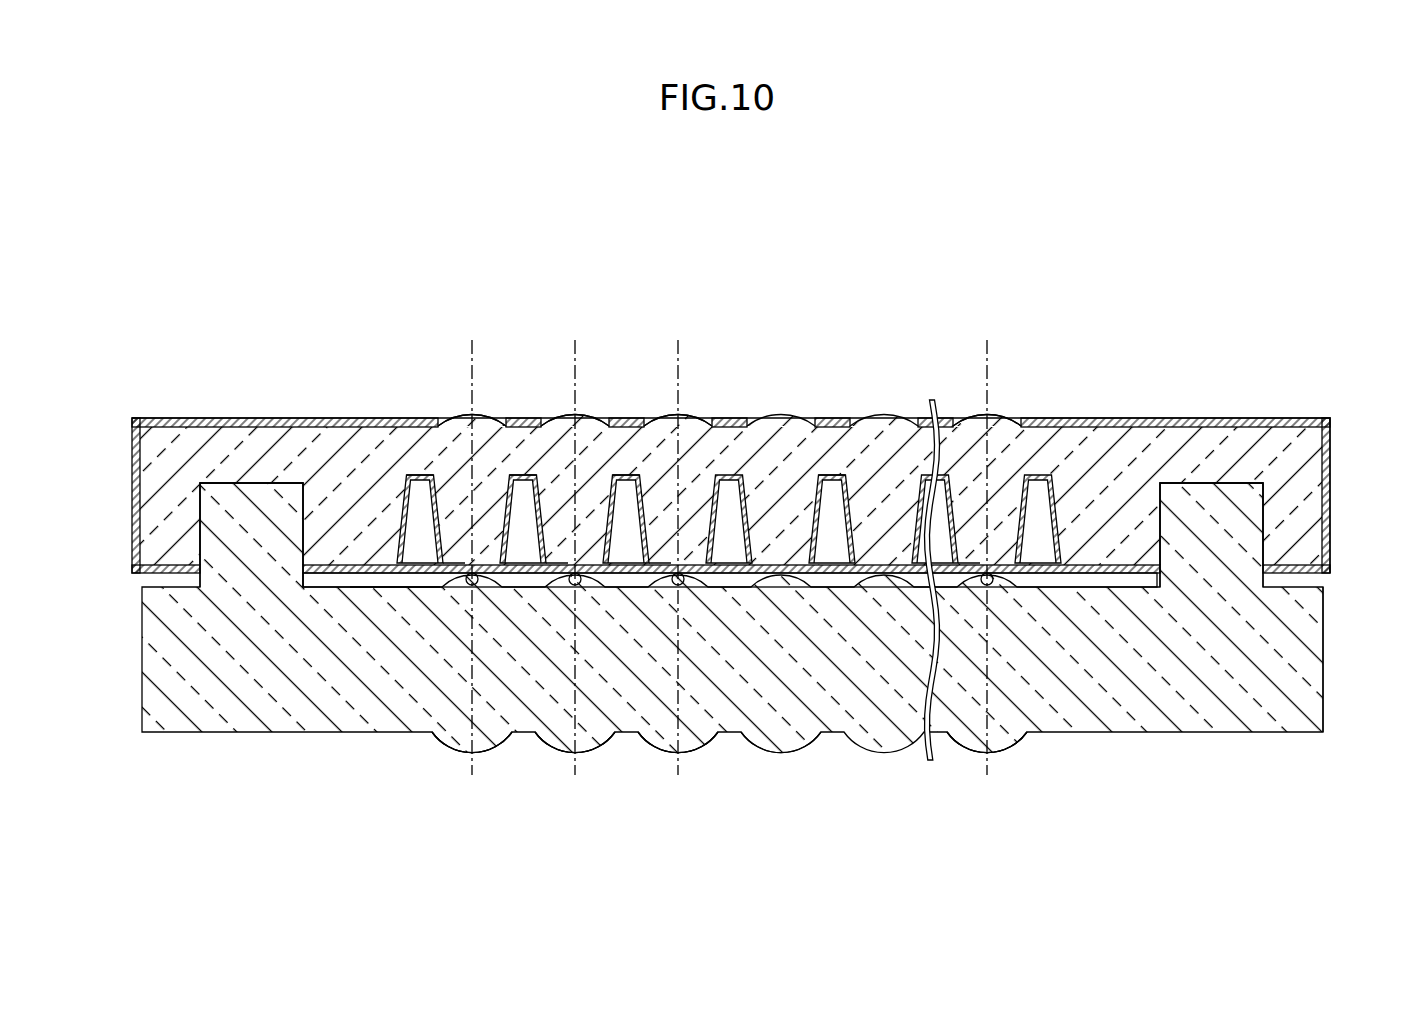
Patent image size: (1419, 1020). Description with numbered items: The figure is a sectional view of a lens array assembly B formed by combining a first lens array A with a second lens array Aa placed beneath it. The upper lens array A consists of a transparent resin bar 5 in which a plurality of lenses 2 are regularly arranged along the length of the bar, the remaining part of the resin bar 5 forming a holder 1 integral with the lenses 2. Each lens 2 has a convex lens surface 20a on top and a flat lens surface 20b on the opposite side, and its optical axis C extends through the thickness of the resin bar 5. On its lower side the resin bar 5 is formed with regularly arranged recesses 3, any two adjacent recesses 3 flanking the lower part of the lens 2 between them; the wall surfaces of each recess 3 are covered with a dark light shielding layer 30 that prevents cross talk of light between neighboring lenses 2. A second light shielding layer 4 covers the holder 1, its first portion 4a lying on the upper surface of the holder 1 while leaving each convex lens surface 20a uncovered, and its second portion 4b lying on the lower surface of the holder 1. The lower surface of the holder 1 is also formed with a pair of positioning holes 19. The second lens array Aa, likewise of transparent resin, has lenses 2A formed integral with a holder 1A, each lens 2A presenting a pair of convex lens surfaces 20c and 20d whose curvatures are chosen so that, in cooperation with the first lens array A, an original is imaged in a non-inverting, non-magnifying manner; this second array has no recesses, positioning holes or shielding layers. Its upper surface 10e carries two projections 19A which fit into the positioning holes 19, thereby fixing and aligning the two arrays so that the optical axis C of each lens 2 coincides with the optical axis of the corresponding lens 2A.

The holder 1 is at (365, 427).
The holder 1A is at (372, 692).
The lens 2 is at (455, 417).
The lens 2A is at (450, 720).
The recess 3 is at (400, 530).
The light shielding layer 30 is at (422, 478).
The light shielding layer 4 is at (745, 513).
The first portion 4a is at (738, 426).
The second portion 4b is at (1125, 588).
The resin bar 5 is at (180, 427).
The upper surface 10e is at (392, 585).
The positioning hole 19 is at (200, 512).
The projection 19A is at (220, 540).
The convex lens surface 20a is at (477, 415).
The flat lens surface 20b is at (457, 572).
The convex lens surface 20c is at (486, 583).
The convex lens surface 20d is at (479, 754).
The lens array A is at (1312, 412).
The second lens array Aa is at (1332, 628).
The lens array assembly B is at (1230, 302).
The optical axis C is at (470, 400).